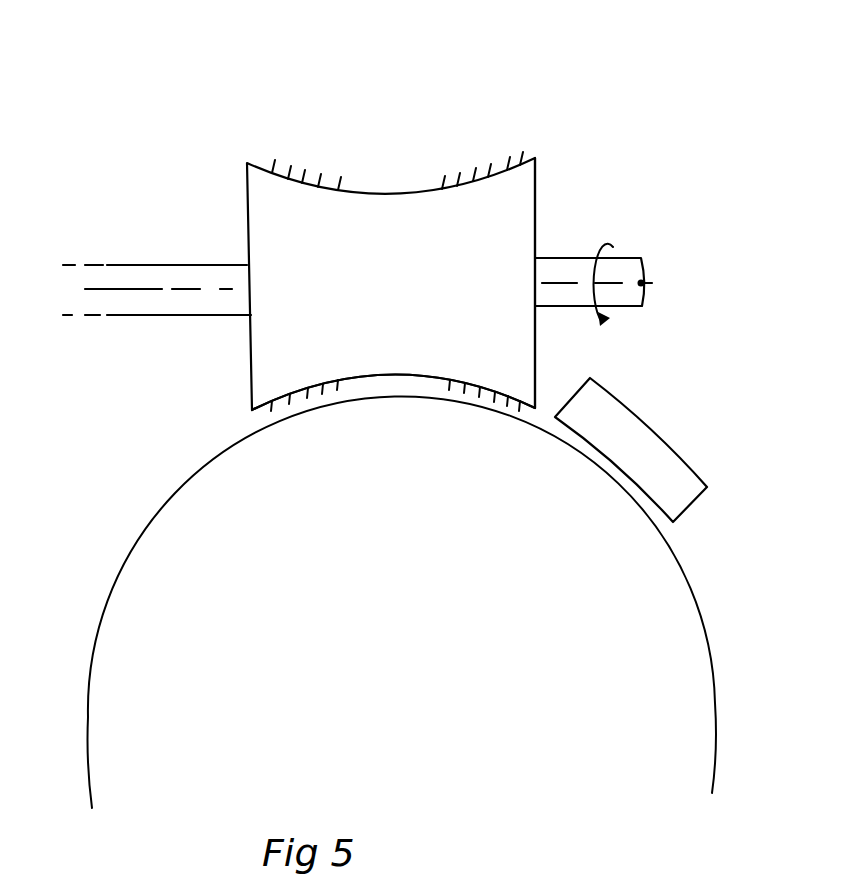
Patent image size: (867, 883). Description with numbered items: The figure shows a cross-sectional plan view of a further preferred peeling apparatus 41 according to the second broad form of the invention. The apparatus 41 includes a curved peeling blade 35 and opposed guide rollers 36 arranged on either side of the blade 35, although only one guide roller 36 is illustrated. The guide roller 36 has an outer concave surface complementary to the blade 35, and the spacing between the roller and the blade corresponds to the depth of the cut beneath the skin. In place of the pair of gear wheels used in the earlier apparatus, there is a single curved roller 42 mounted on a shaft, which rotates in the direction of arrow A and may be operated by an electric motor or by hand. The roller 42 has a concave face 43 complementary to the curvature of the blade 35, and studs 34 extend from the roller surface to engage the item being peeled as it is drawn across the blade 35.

The studs 34 is at (268, 150).
The curved peeling blade 35 is at (143, 532).
The guide rollers 36 is at (683, 478).
The apparatus 41 is at (357, 271).
The curved roller 42 is at (507, 212).
The concave face 43 is at (378, 377).